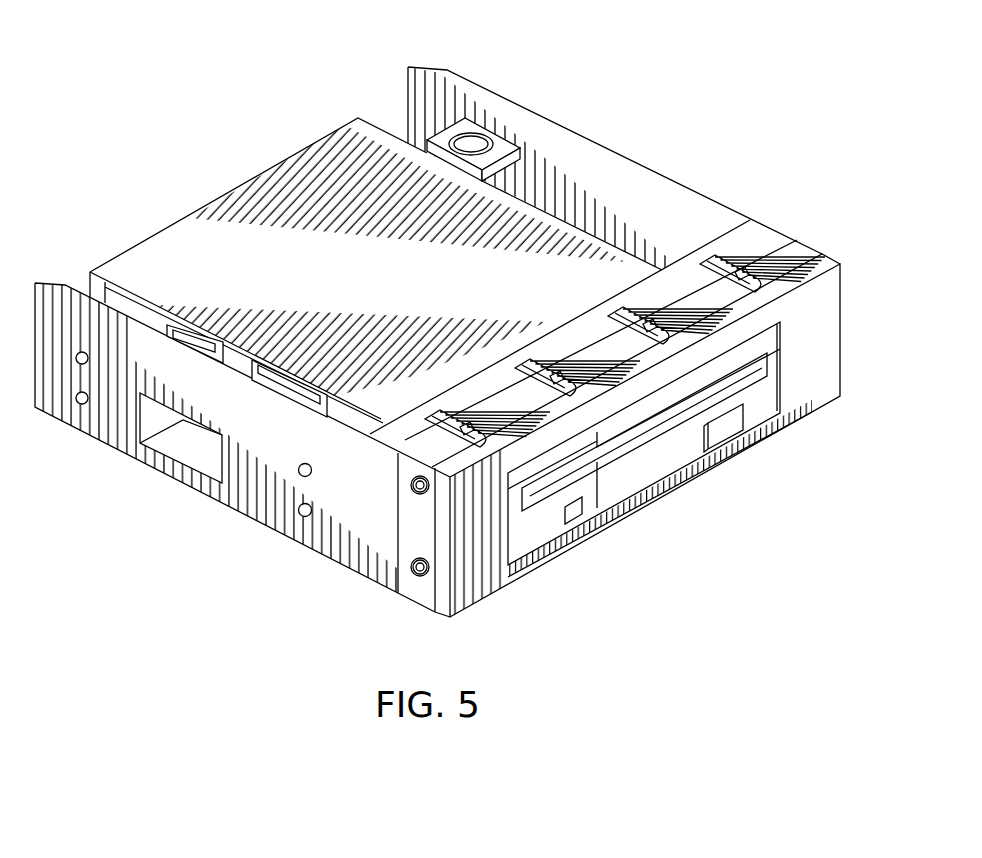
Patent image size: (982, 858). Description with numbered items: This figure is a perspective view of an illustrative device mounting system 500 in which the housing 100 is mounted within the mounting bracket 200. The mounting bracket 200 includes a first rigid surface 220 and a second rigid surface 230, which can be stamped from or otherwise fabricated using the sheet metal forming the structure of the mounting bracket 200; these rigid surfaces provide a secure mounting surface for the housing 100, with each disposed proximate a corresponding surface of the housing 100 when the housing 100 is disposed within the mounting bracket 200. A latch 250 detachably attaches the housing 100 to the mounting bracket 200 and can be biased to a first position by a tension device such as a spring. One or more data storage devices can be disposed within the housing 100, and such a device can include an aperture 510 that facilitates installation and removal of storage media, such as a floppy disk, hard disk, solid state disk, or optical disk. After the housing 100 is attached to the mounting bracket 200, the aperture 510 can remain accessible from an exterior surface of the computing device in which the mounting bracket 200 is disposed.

The device mounting system 500 is at (707, 97).
The mounting bracket 200 is at (852, 267).
The first rigid surface 220 is at (588, 177).
The second rigid surface 230 is at (115, 406).
The latch 250 is at (474, 118).
The housing 100 is at (396, 291).
The aperture 510 is at (632, 442).